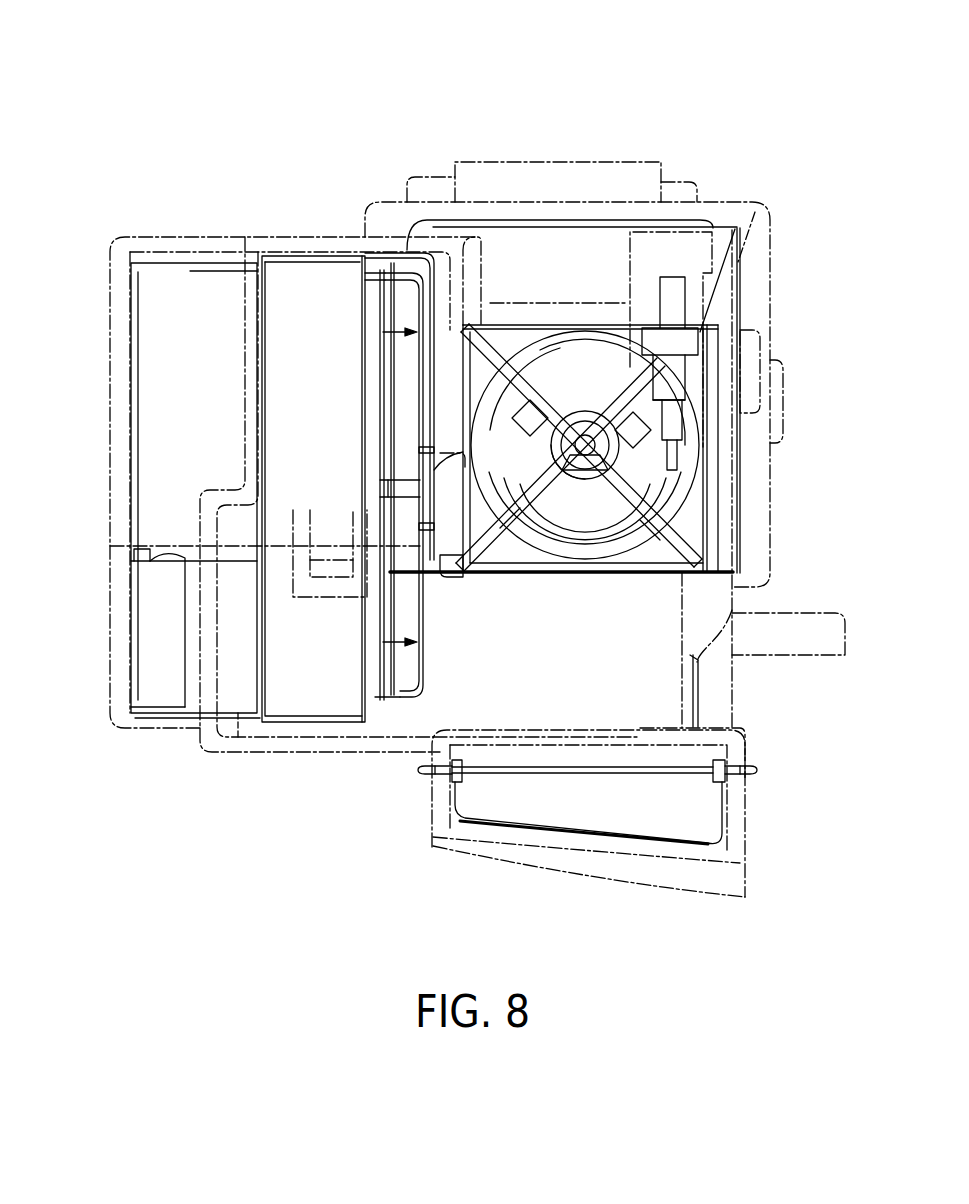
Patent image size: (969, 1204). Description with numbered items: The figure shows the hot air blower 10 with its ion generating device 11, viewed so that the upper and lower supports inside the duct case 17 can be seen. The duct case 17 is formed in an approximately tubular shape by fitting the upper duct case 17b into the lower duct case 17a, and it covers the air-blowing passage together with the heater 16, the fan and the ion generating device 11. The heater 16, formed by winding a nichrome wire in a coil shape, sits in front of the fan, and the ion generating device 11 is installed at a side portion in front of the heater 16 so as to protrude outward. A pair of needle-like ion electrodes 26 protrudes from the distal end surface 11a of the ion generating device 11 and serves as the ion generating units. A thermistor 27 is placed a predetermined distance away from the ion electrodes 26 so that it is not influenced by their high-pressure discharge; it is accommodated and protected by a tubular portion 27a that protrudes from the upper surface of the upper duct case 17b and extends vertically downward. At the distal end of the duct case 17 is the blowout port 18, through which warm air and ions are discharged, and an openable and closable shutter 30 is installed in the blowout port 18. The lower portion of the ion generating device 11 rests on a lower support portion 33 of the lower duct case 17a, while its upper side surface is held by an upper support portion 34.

The hot air blower 10 is at (669, 122).
The ion generating device 11 is at (178, 263).
The distal end surface 11a is at (378, 397).
The heater 16 is at (567, 347).
The duct case 17 is at (110, 675).
The lower duct case 17a is at (733, 682).
The upper duct case 17b is at (703, 202).
The blowout port 18 is at (690, 747).
The ion electrodes 26 is at (397, 320).
The thermistor 27 is at (683, 388).
The tubular portion 27a is at (650, 232).
The shutter 30 is at (628, 823).
The lower support portion 33 is at (247, 722).
The upper support portion 34 is at (392, 268).